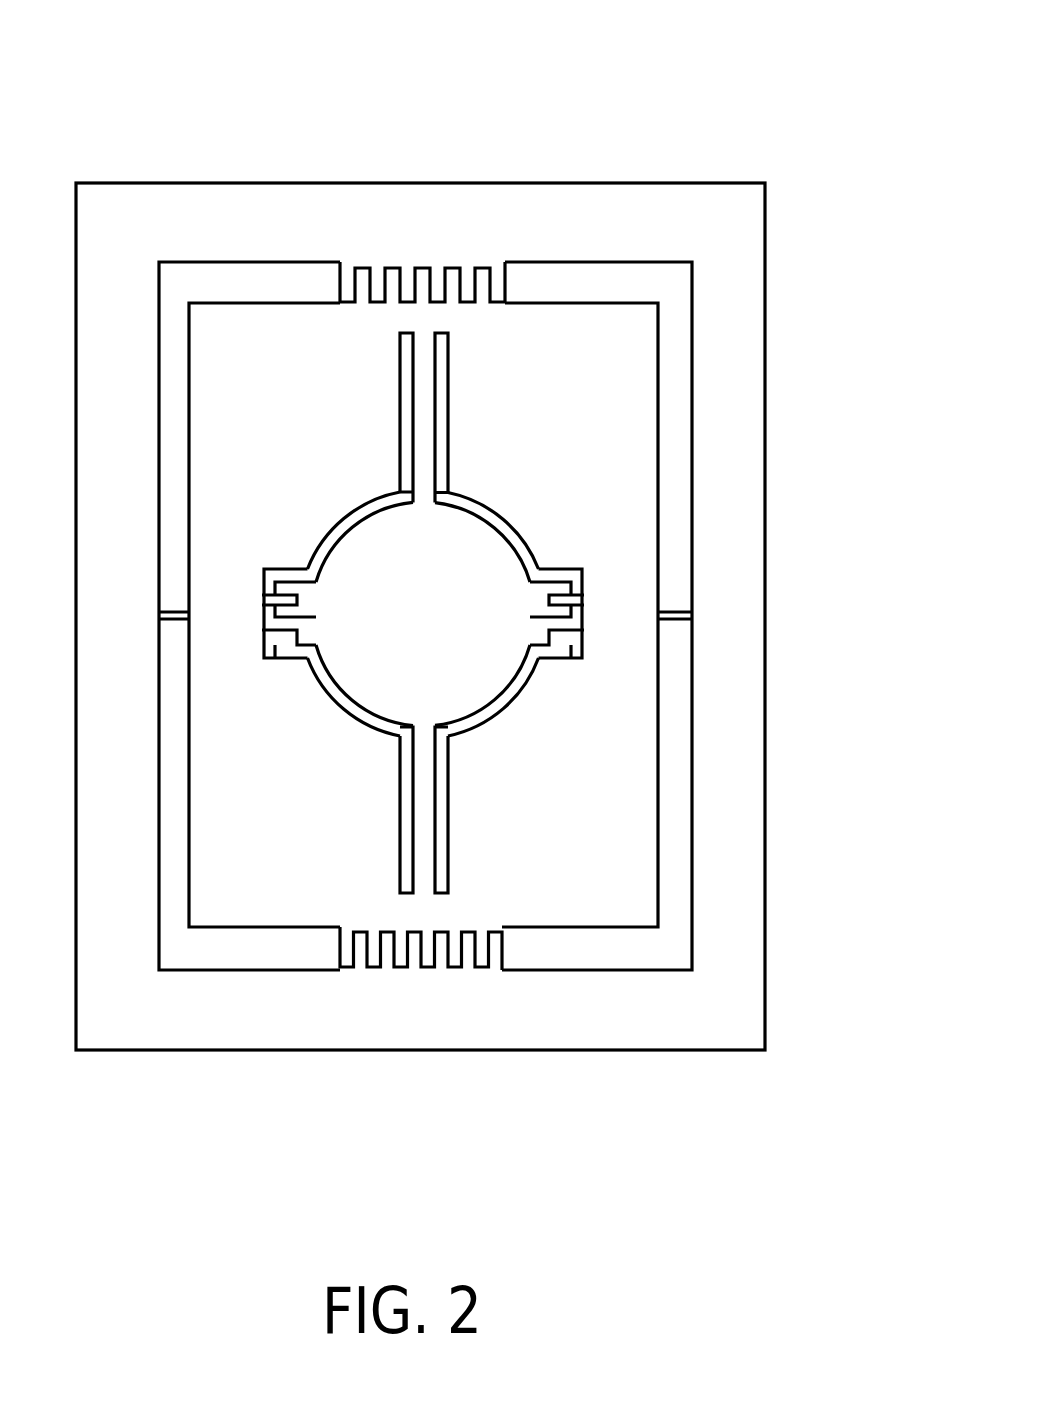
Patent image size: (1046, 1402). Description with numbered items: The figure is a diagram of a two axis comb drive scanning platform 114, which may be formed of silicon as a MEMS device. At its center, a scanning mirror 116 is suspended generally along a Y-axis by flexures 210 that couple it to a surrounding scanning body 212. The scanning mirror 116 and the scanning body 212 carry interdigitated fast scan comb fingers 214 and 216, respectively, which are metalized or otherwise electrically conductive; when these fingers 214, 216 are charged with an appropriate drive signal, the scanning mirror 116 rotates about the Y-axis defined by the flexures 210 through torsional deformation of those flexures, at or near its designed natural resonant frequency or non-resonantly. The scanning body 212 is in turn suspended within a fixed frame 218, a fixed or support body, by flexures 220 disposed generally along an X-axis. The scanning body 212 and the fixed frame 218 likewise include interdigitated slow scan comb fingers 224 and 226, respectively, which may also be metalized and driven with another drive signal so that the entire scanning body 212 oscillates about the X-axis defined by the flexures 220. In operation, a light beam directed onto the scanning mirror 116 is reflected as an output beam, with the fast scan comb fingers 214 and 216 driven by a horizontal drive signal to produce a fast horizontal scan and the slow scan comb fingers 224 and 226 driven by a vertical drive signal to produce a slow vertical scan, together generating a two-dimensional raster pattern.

The scanning platform 114 is at (783, 90).
The scanning mirror 116 is at (453, 575).
The flexures 210 is at (443, 397).
The scanning body 212 is at (318, 419).
The fast scan comb fingers 214 is at (563, 654).
The fast scan comb fingers 216 is at (582, 635).
The fixed frame 218 is at (740, 690).
The flexures 220 is at (176, 622).
The slow scan comb fingers 224 is at (499, 305).
The slow scan comb fingers 226 is at (512, 283).